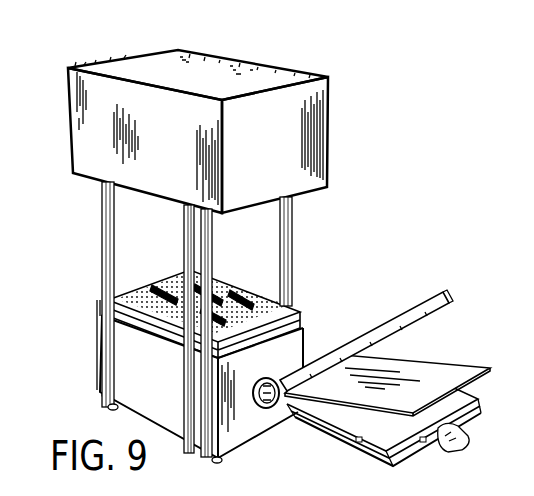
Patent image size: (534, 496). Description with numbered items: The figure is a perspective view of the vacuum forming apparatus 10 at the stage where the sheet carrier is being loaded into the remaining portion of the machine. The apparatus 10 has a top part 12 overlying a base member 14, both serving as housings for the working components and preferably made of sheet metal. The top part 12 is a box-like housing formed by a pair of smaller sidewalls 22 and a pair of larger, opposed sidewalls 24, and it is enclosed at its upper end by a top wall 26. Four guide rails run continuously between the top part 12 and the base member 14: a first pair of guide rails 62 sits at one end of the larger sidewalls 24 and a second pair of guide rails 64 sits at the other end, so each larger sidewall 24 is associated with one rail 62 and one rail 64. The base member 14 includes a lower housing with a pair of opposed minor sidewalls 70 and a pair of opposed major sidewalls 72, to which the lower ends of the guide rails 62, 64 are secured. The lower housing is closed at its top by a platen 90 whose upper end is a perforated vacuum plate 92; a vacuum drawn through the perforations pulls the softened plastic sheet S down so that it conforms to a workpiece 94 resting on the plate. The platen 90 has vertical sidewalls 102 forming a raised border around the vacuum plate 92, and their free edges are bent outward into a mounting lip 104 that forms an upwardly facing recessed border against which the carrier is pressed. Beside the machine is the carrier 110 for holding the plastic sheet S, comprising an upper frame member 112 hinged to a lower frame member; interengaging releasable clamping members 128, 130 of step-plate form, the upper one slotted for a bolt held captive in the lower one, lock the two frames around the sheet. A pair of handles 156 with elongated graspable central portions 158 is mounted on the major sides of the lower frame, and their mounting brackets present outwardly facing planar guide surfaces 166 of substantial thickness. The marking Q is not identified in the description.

The vacuum forming apparatus 10 is at (268, 47).
The top part 12 is at (234, 131).
The base member 14 is at (210, 353).
The smaller sidewalls 22 is at (282, 153).
The larger sidewalls 24 is at (171, 150).
The top wall 26 is at (209, 84).
The first pair of guide rails 62 is at (251, 325).
The second pair of guide rails 64 is at (102, 223).
The minor sidewalls 70 is at (256, 436).
The major sidewalls 72 is at (172, 406).
The platen 90 is at (326, 251).
The perforated vacuum plate 92 is at (290, 294).
The workpiece 94 is at (208, 303).
The vertical sidewalls 102 is at (242, 307).
The mounting lip 104 is at (254, 342).
The carrier 110 is at (396, 398).
The upper frame member 112 is at (391, 311).
The upper clamping member 128 is at (404, 328).
The lower clamping member 130 is at (438, 441).
The handles 156 is at (324, 452).
The central portions 158 is at (303, 424).
The guide surfaces 166 is at (347, 447).
The plastic sheet S is at (462, 372).
The hub Q is at (257, 394).